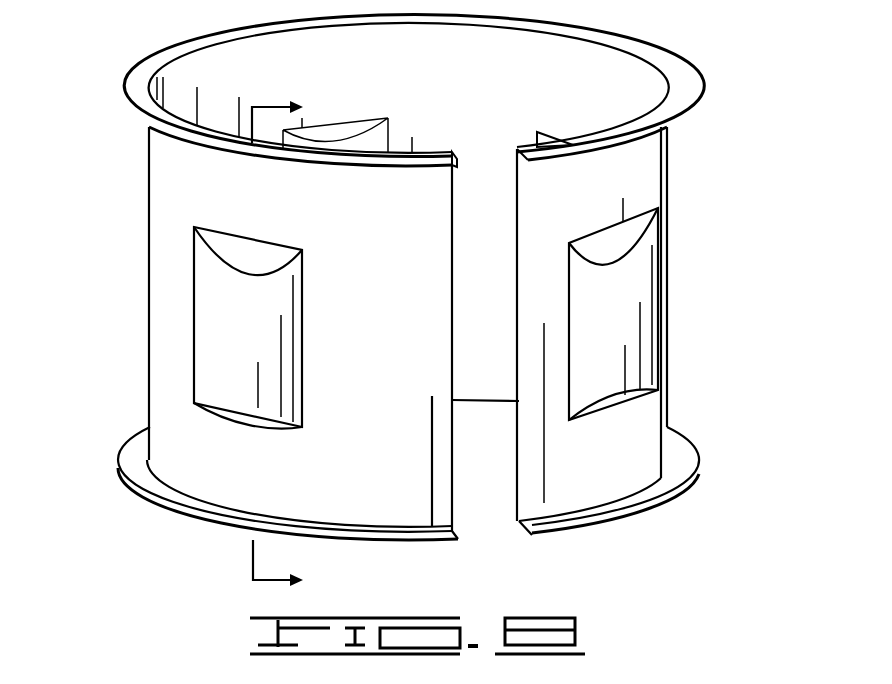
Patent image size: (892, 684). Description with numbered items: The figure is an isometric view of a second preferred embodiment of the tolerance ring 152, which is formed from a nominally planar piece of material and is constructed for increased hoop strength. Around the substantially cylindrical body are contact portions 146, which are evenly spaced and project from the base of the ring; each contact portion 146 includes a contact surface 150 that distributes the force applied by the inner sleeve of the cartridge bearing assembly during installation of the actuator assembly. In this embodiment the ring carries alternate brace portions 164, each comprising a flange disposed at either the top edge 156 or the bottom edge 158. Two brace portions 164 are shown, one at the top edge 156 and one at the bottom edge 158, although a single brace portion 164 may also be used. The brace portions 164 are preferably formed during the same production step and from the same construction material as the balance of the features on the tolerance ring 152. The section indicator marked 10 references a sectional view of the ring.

The tolerance ring 152 is at (686, 52).
The top edge 156 is at (157, 80).
The bottom edge 158 is at (142, 445).
The brace portion 164 is at (197, 507).
The contact surface 150 is at (625, 273).
The contact portion 146 is at (620, 337).
The section line 10 is at (296, 343).